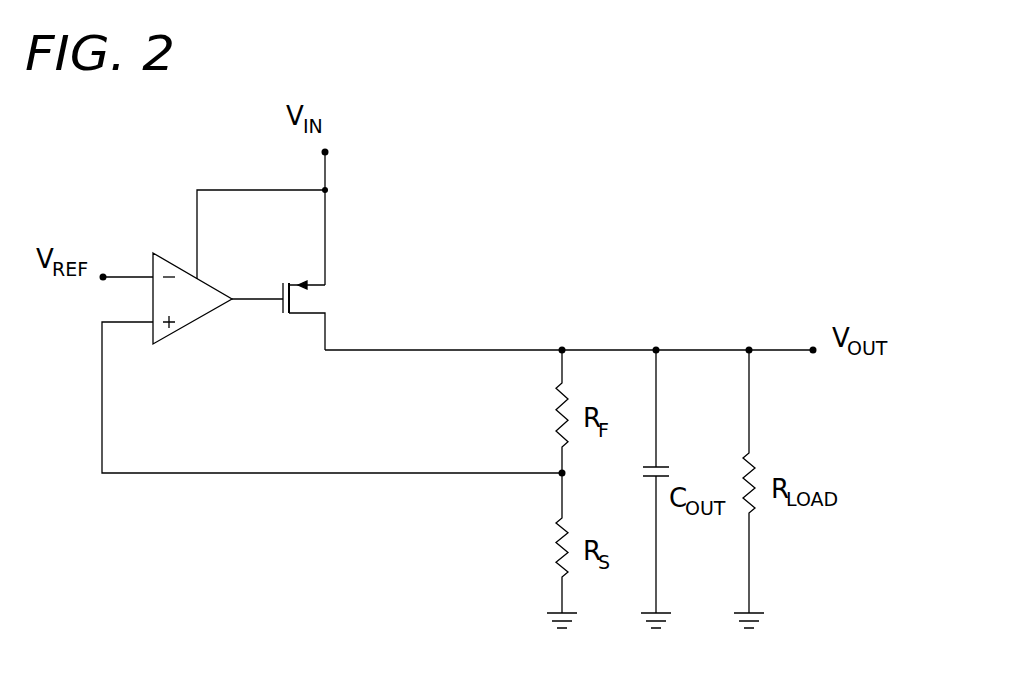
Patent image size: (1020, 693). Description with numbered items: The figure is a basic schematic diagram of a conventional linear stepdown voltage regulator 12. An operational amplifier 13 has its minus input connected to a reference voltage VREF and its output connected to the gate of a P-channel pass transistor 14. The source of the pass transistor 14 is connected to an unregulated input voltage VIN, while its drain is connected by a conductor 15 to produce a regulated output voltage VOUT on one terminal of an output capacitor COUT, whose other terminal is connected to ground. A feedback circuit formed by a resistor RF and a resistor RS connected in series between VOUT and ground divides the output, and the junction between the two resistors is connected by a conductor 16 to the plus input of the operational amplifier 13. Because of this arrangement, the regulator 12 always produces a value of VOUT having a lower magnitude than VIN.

The linear voltage regulator 12 is at (208, 495).
The operational amplifier 13 is at (195, 315).
The P-channel pass transistor 14 is at (292, 299).
The conductor 15 is at (693, 350).
The conductor 16 is at (392, 473).